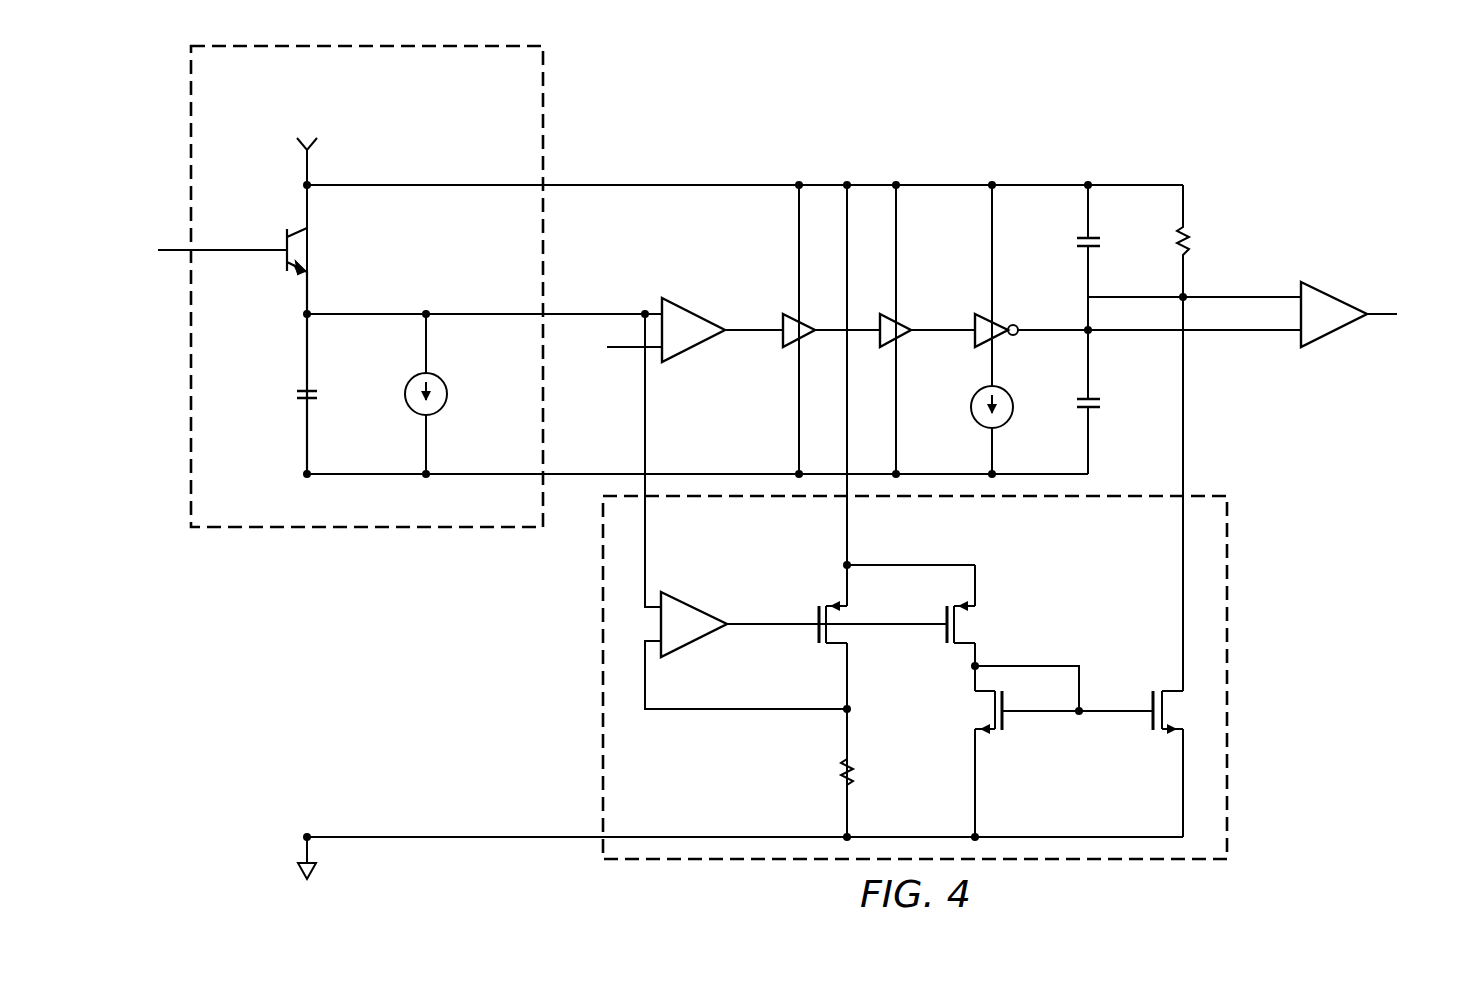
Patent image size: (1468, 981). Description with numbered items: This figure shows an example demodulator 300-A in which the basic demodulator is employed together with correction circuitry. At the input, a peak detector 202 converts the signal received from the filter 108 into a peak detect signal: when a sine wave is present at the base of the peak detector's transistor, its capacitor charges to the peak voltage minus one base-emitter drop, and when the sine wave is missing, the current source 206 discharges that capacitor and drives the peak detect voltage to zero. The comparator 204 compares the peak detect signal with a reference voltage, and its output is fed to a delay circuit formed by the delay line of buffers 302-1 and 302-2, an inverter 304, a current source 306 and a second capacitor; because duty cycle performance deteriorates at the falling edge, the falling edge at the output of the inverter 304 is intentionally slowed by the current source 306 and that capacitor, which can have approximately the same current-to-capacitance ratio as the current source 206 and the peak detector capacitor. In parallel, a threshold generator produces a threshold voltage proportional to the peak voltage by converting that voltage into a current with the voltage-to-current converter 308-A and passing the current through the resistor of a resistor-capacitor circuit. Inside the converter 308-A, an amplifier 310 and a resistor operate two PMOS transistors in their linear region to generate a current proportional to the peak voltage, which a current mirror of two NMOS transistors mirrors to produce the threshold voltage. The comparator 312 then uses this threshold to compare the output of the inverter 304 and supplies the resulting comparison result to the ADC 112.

The peak detector 202 is at (597, 286).
The filter 108 is at (197, 250).
The comparator 204 is at (692, 350).
The current source 206 is at (447, 395).
The demodulator 300-A is at (875, 387).
The buffer 302-1 is at (783, 322).
The buffer 302-2 is at (893, 324).
The inverter 304 is at (996, 326).
The current source 306 is at (972, 420).
The voltage-to-current converter 308-A is at (820, 586).
The amplifier 310 is at (700, 645).
The comparator 312 is at (1334, 298).
The ADC 112 is at (1405, 318).